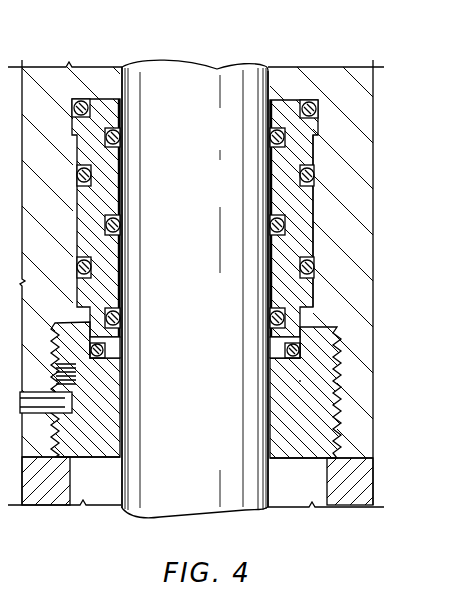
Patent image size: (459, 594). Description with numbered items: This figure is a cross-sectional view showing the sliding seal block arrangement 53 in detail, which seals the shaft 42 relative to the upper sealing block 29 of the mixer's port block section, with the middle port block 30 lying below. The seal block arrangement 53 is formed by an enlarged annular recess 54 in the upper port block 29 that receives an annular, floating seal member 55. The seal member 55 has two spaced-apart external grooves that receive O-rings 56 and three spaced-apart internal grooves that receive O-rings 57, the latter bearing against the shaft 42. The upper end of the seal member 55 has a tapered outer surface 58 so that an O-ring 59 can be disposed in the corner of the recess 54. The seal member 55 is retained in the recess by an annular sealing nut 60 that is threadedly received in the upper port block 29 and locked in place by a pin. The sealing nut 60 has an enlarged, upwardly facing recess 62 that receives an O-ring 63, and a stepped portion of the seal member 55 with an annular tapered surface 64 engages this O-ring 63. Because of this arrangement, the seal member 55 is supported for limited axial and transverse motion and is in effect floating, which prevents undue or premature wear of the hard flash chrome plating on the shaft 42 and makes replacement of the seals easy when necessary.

The upper sealing block 29 is at (350, 289).
The middle port block 30 is at (357, 488).
The shaft 42 is at (193, 77).
The sliding seal block arrangement 53 is at (322, 206).
The annular recess 54 is at (316, 143).
The floating seal member 55 is at (300, 230).
The O-rings 56 is at (314, 177).
The O-rings 57 is at (270, 137).
The tapered outer surface 58 is at (316, 115).
The O-ring 59 is at (310, 101).
The annular sealing nut 60 is at (287, 430).
The upwardly facing recess 62 is at (300, 328).
The O-ring 63 is at (290, 360).
The annular tapered surface 64 is at (302, 344).